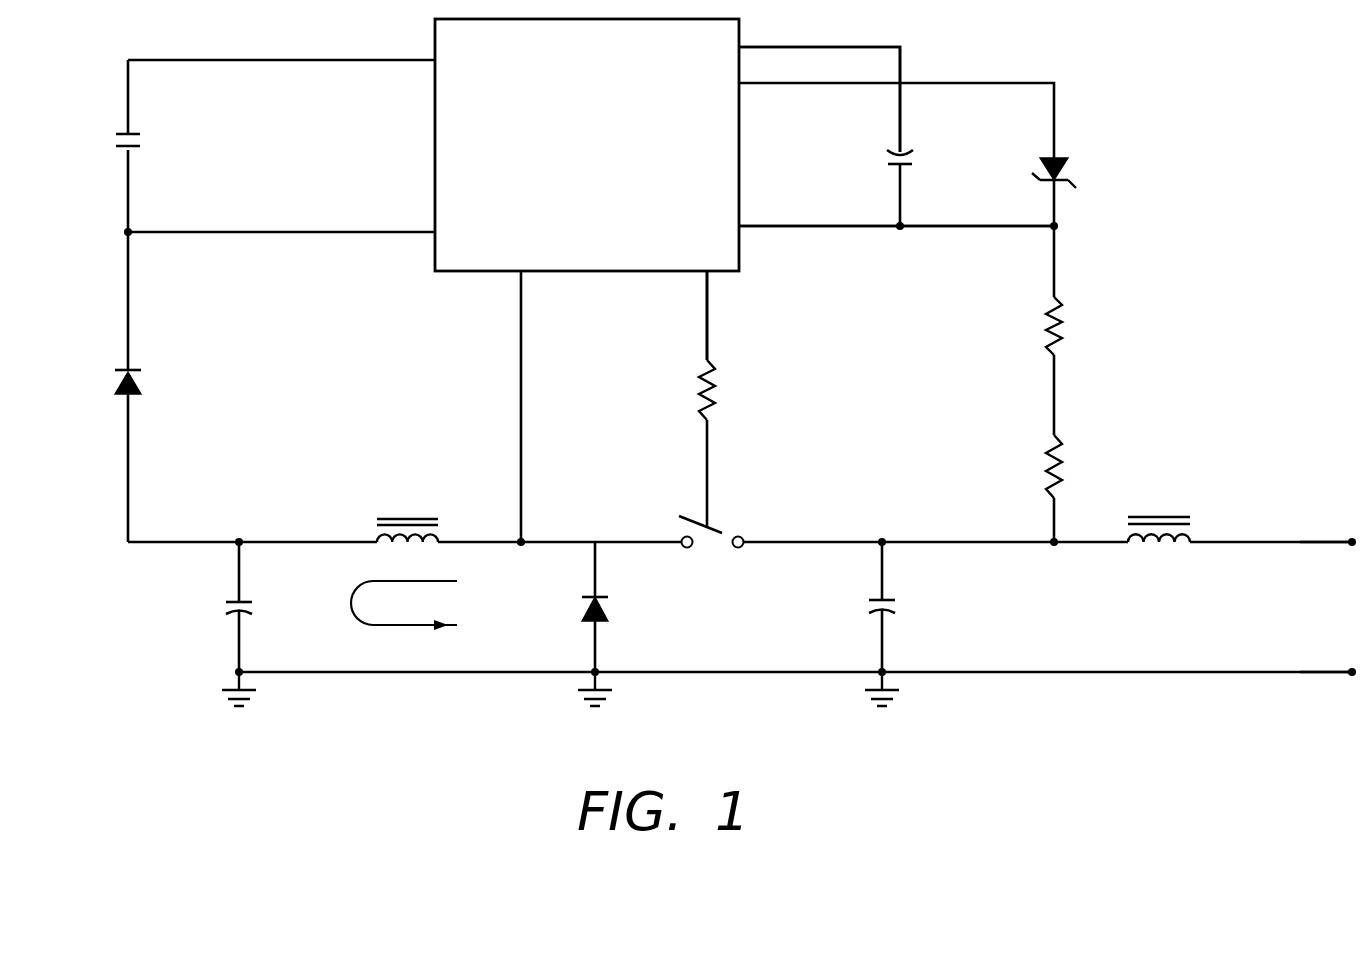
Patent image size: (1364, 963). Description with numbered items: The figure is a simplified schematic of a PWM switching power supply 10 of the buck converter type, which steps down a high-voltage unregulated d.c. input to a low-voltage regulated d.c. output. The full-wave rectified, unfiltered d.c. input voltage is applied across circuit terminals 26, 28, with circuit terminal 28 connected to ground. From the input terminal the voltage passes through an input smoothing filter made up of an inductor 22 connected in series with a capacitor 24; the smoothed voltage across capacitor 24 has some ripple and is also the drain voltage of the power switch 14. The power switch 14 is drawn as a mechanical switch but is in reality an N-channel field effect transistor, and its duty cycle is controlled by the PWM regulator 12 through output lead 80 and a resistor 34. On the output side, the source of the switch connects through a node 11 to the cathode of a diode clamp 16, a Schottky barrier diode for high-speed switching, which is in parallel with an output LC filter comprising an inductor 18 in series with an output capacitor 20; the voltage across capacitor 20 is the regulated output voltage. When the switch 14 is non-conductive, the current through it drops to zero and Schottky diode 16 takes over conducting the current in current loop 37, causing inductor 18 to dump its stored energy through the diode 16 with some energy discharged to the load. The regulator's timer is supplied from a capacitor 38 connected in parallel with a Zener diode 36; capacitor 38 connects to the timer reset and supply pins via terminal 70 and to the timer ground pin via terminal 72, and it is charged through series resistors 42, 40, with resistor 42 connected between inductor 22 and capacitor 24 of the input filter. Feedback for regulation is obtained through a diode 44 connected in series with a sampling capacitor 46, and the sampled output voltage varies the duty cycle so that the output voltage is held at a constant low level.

The switching power supply 10 is at (1203, 228).
The node 11 is at (595, 540).
The PWM regulator 12 is at (733, 255).
The power switch 14 is at (717, 530).
The diode clamp 16 is at (608, 611).
The inductor 18 is at (408, 518).
The output capacitor 20 is at (235, 600).
The inductor 22 is at (1178, 516).
The capacitor 24 is at (887, 600).
The circuit terminal 26 is at (1325, 540).
The circuit terminal 28 is at (1308, 674).
The resistor 34 is at (716, 390).
The Zener diode 36 is at (1066, 172).
The current loop 37 is at (412, 626).
The capacitor 38 is at (905, 155).
The resistor 40 is at (1062, 345).
The resistor 42 is at (1062, 485).
The diode 44 is at (114, 390).
The sampling capacitor 46 is at (122, 148).
The terminal 70 is at (823, 228).
The terminal 72 is at (852, 83).
The output lead 80 is at (708, 320).